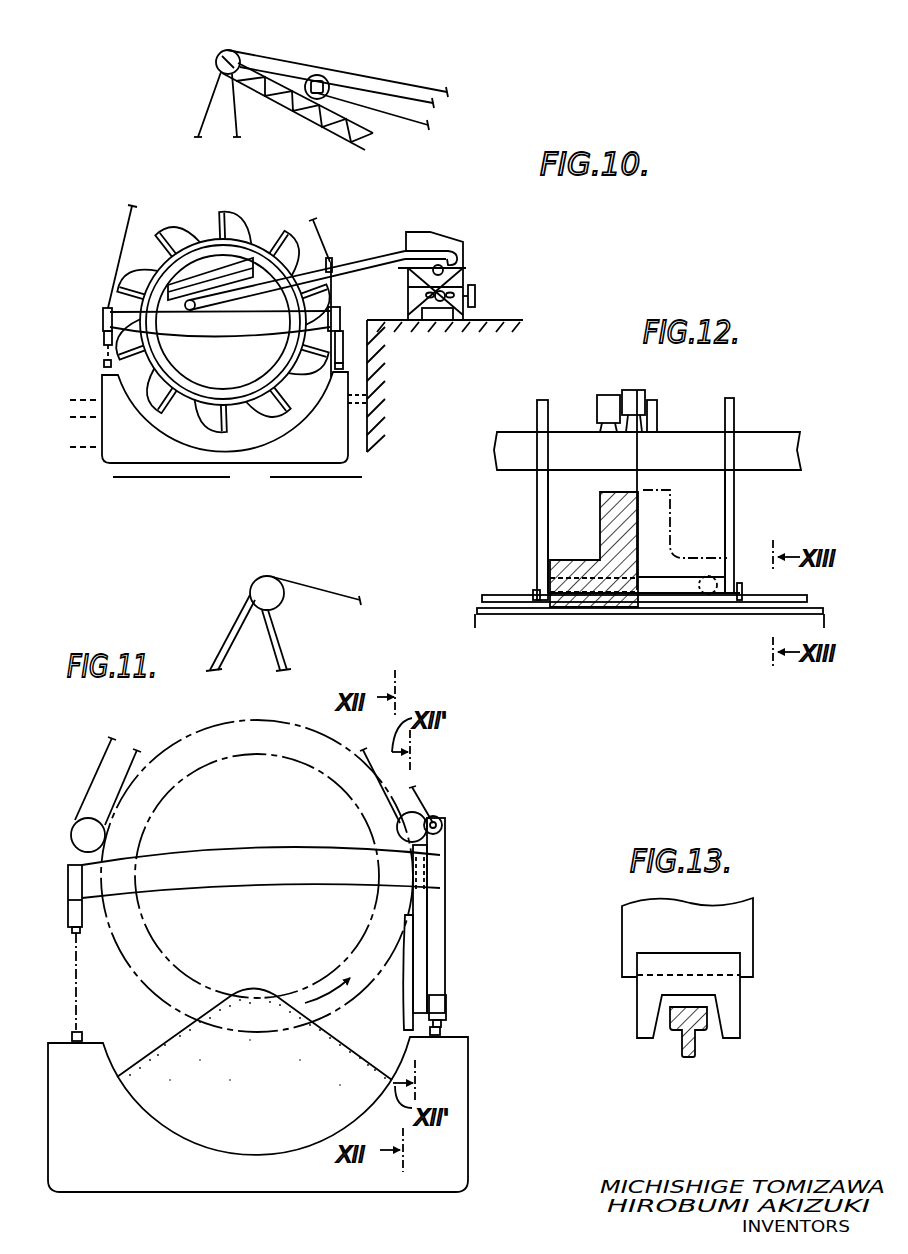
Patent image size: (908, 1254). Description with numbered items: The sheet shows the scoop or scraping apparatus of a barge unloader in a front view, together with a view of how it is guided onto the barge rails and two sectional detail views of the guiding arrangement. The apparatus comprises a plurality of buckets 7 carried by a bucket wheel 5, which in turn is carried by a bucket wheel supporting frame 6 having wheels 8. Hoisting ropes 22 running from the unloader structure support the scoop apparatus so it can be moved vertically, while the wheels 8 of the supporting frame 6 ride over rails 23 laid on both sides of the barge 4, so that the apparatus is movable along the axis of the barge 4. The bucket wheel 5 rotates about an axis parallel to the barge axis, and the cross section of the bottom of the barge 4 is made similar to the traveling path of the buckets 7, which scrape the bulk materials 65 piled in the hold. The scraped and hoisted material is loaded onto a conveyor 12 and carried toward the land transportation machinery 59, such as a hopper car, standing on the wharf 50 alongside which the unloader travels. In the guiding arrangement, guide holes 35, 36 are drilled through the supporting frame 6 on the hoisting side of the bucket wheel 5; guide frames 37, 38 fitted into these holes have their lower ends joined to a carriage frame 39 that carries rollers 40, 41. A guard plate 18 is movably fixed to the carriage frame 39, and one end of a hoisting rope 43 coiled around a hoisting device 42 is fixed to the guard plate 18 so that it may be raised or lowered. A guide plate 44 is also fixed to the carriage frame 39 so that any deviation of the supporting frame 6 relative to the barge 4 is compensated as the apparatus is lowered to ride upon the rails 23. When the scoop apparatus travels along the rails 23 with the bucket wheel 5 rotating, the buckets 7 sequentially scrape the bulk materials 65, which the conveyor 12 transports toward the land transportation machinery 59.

In FIG. 10, the barge 4 is at (110, 453).
In FIG. 11, the barge 4 is at (162, 1183).
In FIG. 10, the bucket wheel 5 is at (208, 232).
In FIG. 10, the bucket wheel supporting frame 6 is at (213, 327).
In FIG. 12, the bucket wheel supporting frame 6 is at (778, 463).
In FIG. 11, the bucket wheel supporting frame 6 is at (213, 857).
In FIG. 10, the buckets 7 is at (173, 237).
In FIG. 10, the wheels 8 is at (103, 342).
In FIG. 11, the wheels 8 is at (77, 935).
In FIG. 10, the conveyor 12 is at (360, 262).
In FIG. 12, the guard plate 18 is at (615, 525).
In FIG. 11, the guard plate 18 is at (405, 987).
In FIG. 10, the hoisting ropes 22 is at (373, 73).
In FIG. 10, the rails 23 is at (108, 359).
In FIG. 11, the rails 23 is at (97, 1015).
In FIG. 13, the rails 23 is at (695, 1038).
In FIG. 12, the guide hole 35 is at (537, 427).
In FIG. 12, the guide hole 36 is at (734, 427).
In FIG. 12, the guide frame 37 is at (540, 540).
In FIG. 12, the guide frame 38 is at (733, 521).
In FIG. 12, the carriage frame 39 is at (682, 580).
In FIG. 13, the carriage frame 39 is at (738, 922).
In FIG. 12, the roller 40 is at (572, 597).
In FIG. 12, the roller 41 is at (708, 595).
In FIG. 12, the hoisting device 42 is at (641, 378).
In FIG. 11, the hoisting device 42 is at (442, 822).
In FIG. 12, the hoisting rope 43 is at (640, 477).
In FIG. 11, the hoisting rope 43 is at (447, 920).
In FIG. 12, the guide plate 44 is at (548, 593).
In FIG. 13, the guide plate 44 is at (733, 995).
In FIG. 10, the wharf 50 is at (403, 342).
In FIG. 10, the land transportation machinery 59 is at (480, 295).
In FIG. 11, the bulk materials 65 is at (258, 1124).